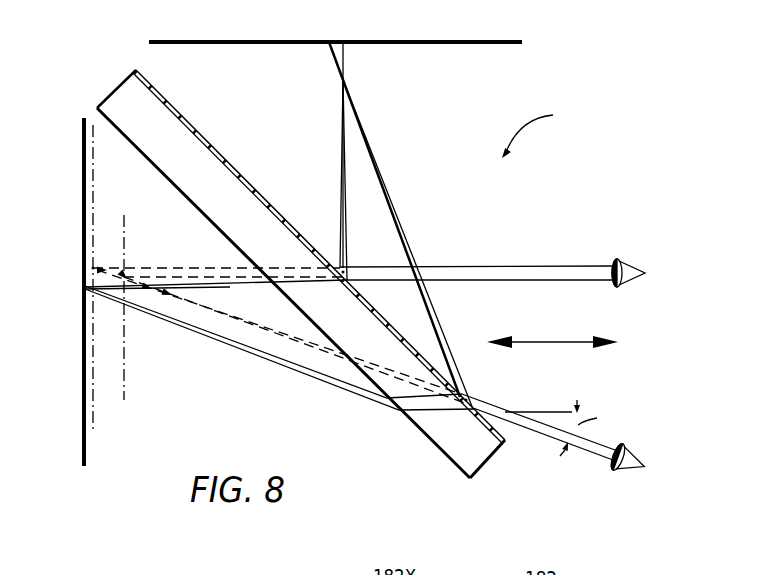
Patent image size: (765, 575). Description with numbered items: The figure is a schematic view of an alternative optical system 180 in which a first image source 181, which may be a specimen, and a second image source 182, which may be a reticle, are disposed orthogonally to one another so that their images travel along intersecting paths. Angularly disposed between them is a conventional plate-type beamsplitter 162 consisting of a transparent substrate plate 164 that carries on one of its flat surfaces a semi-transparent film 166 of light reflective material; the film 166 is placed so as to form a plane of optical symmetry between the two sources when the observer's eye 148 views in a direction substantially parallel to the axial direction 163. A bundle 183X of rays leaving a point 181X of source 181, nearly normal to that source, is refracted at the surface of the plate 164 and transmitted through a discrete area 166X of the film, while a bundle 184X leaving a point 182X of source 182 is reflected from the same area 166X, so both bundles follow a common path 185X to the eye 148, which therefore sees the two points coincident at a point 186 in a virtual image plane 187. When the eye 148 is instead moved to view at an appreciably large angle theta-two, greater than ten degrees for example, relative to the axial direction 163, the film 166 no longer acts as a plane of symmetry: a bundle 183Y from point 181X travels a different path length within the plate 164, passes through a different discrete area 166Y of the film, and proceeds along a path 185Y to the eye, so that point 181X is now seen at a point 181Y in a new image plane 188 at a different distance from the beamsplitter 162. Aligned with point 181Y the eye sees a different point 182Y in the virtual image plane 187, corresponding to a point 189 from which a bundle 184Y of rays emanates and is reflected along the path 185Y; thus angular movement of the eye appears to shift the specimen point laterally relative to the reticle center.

The observer's eye 148 is at (637, 250).
The beamsplitter 162 is at (111, 84).
The axial direction 163 is at (548, 341).
The transparent substrate plate 164 is at (146, 157).
The semi-transparent film 166 is at (178, 109).
The discrete area of beamsplitter film 166X is at (346, 268).
The discrete area of film 166Y is at (470, 394).
The optical system 180 is at (543, 130).
The first image source 181 is at (83, 435).
The point of source 181X is at (83, 290).
The point in new image plane 181Y is at (125, 273).
The second image source 182 is at (507, 40).
The point of source 182X is at (343, 42).
The point in virtual image plane 182Y is at (93, 267).
The bundle of light rays 183X is at (253, 287).
The bundle of light rays 183Y is at (293, 366).
The bundle of light rays 184X is at (341, 190).
The bundle of light rays 184Y is at (407, 243).
The common path 185X is at (547, 255).
The path 185Y is at (500, 410).
The point 186 is at (97, 270).
The virtual image plane 187 is at (93, 423).
The new image plane 188 is at (125, 393).
The point of image source 189 is at (330, 42).